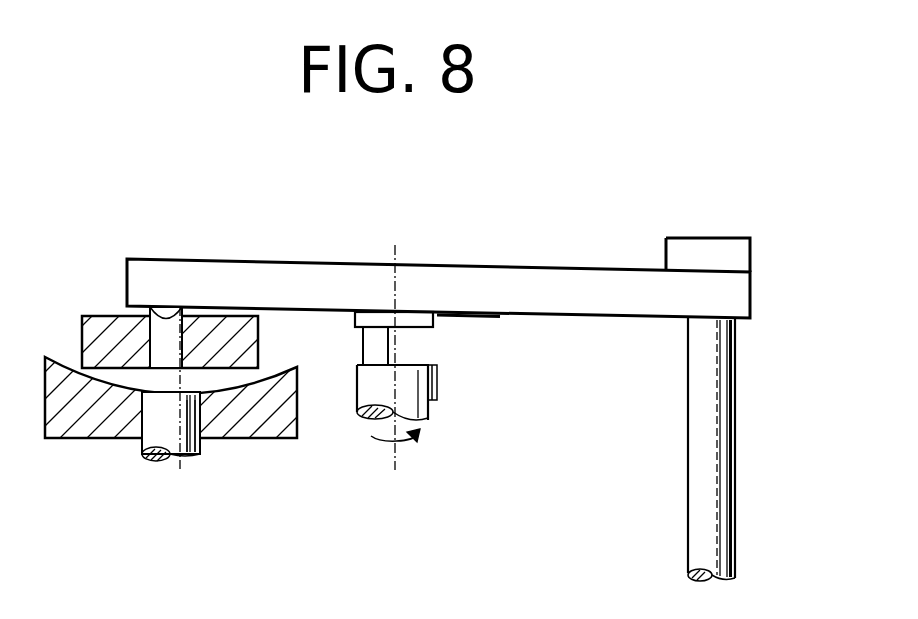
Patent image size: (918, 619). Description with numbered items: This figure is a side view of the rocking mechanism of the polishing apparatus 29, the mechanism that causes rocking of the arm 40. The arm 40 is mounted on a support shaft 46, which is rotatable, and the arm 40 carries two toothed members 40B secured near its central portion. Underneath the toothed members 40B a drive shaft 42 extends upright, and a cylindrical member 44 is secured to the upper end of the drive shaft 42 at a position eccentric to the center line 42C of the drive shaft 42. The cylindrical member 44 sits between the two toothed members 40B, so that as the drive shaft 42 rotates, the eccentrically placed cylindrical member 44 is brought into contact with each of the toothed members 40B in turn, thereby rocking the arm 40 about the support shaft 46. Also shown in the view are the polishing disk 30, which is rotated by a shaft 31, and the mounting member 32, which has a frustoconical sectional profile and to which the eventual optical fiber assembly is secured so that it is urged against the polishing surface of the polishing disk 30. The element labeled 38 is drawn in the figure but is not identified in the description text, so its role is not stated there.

The polishing apparatus 29 is at (663, 553).
The polishing disk 30 is at (257, 422).
The shaft 31 is at (197, 440).
The mounting member 32 is at (247, 338).
The pin 38 is at (170, 315).
The arm 40 is at (578, 300).
The toothed members 40B is at (437, 316).
The drive shaft 42 is at (437, 400).
The center line 42C is at (397, 347).
The cylindrical member 44 is at (370, 338).
The support shaft 46 is at (703, 467).